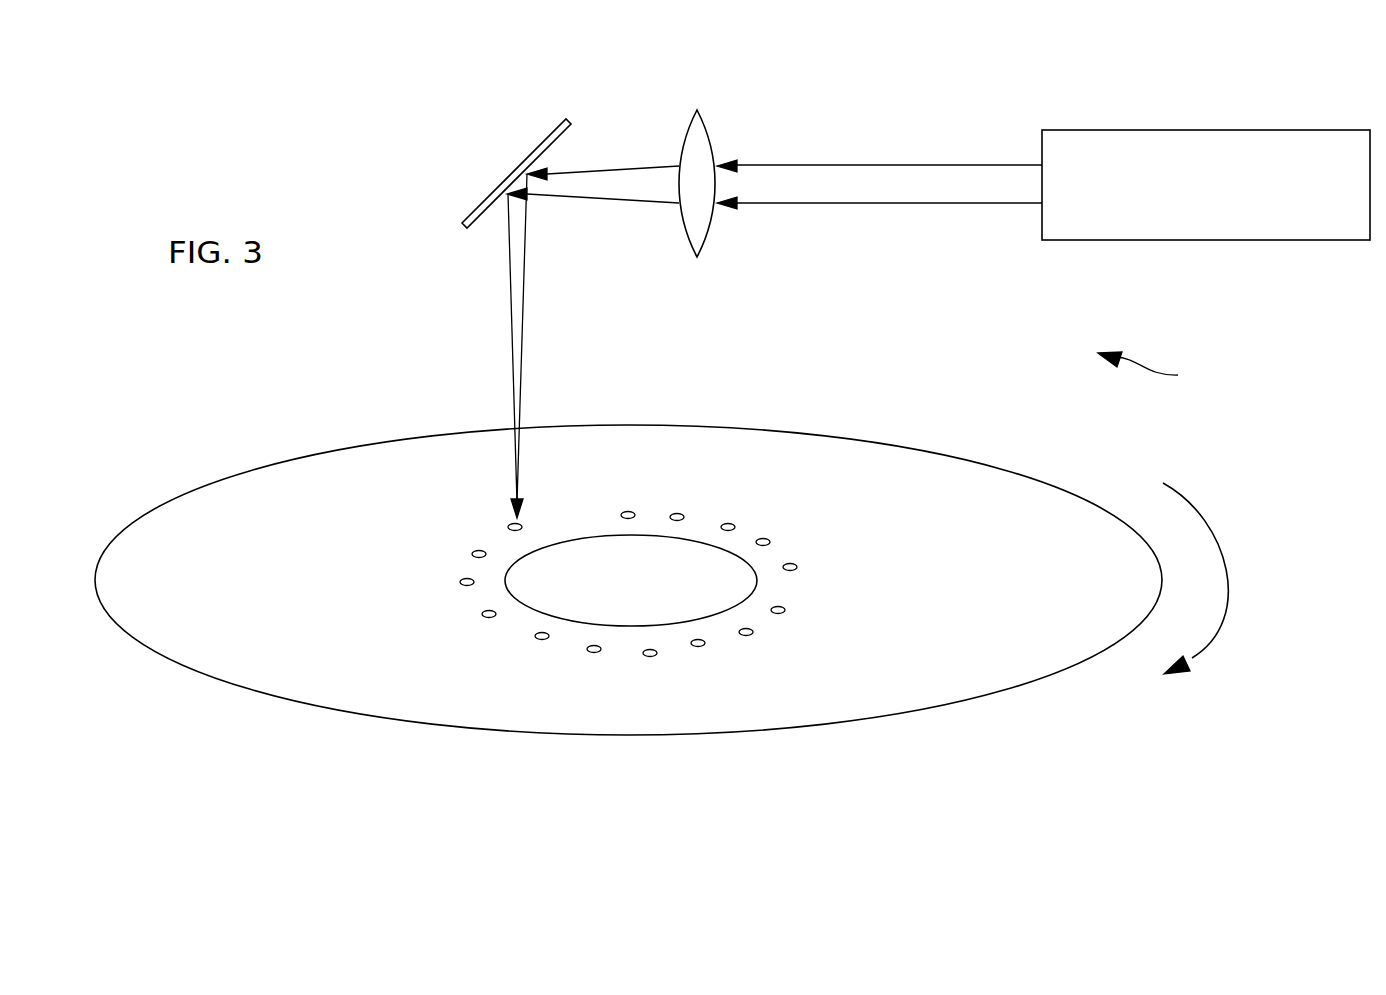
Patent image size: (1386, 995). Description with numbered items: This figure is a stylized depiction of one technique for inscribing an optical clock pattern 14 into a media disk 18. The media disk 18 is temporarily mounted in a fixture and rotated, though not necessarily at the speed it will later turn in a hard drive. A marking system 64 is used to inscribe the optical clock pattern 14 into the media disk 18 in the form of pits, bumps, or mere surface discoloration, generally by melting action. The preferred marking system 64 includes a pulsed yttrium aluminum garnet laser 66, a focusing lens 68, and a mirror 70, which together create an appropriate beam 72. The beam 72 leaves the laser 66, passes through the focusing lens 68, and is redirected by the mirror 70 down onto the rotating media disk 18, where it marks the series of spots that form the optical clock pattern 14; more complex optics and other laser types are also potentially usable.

The optical clock pattern 14 is at (797, 564).
The media disk 18 is at (332, 588).
The marking system 64 is at (1156, 376).
The pulsed yttrium aluminum garnet (YAG) laser 66 is at (1233, 194).
The focusing lens 68 is at (698, 130).
The mirror 70 is at (518, 170).
The beam 72 is at (835, 203).